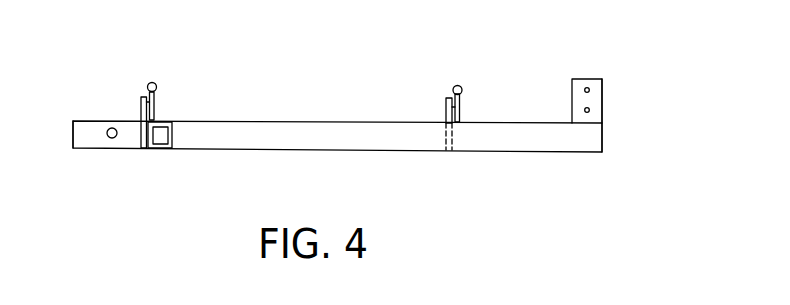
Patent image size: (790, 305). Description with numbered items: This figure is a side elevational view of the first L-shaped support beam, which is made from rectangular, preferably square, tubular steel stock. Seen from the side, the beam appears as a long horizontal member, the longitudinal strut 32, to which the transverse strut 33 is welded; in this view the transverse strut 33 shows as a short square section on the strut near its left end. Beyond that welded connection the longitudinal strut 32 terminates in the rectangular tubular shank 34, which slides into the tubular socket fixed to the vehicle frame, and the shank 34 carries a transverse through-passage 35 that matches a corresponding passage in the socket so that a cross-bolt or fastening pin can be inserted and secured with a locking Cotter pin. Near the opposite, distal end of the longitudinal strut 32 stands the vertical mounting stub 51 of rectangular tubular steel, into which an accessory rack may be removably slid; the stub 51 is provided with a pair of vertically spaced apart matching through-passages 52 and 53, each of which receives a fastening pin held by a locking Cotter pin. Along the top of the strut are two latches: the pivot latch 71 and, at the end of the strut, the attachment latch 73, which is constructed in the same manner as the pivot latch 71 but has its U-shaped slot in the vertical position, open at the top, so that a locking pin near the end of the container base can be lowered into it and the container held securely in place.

The longitudinal strut 32 is at (507, 150).
The transverse strut 33 is at (175, 137).
The rectangular tubular shank 34 is at (98, 150).
The through-passage 35 is at (107, 132).
The vertical mounting stub 51 is at (604, 118).
The through-passage 52 is at (589, 89).
The through-passage 53 is at (584, 110).
The pivot latch 71 is at (446, 103).
The attachment latch 73 is at (141, 107).